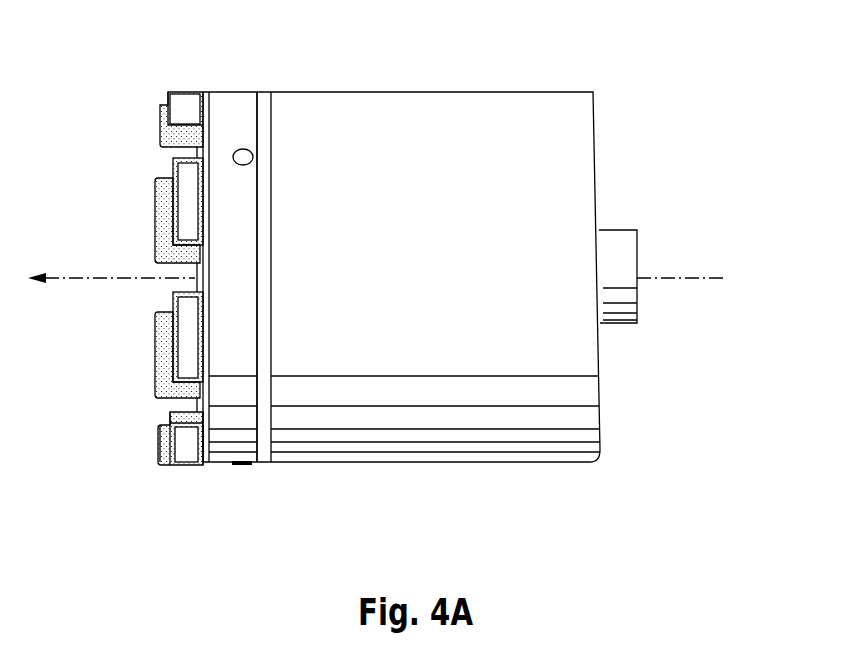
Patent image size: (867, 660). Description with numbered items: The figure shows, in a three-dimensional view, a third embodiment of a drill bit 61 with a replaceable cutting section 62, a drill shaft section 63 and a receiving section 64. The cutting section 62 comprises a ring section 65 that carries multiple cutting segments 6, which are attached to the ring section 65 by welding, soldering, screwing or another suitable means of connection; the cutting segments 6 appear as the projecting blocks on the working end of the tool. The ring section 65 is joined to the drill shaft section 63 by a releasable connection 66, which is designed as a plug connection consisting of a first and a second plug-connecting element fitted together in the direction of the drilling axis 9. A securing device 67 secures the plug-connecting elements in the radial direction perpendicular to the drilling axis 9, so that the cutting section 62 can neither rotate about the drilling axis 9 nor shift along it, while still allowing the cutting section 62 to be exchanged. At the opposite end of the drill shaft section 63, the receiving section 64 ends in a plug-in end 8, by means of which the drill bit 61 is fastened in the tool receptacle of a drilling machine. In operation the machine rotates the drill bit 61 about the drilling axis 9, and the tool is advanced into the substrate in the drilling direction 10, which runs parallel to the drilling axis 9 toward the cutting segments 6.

The cutting segments 6 is at (170, 103).
The plug-in end 8 is at (618, 240).
The drilling axis 9 is at (693, 278).
The drilling direction 10 is at (52, 281).
The drill bit 61 is at (637, 115).
The replaceable cutting section 62 is at (189, 480).
The drill shaft section 63 is at (437, 418).
The receiving section 64 is at (543, 435).
The ring section 65 is at (227, 120).
The releasable connection 66 is at (268, 107).
The securing device 67 is at (240, 470).